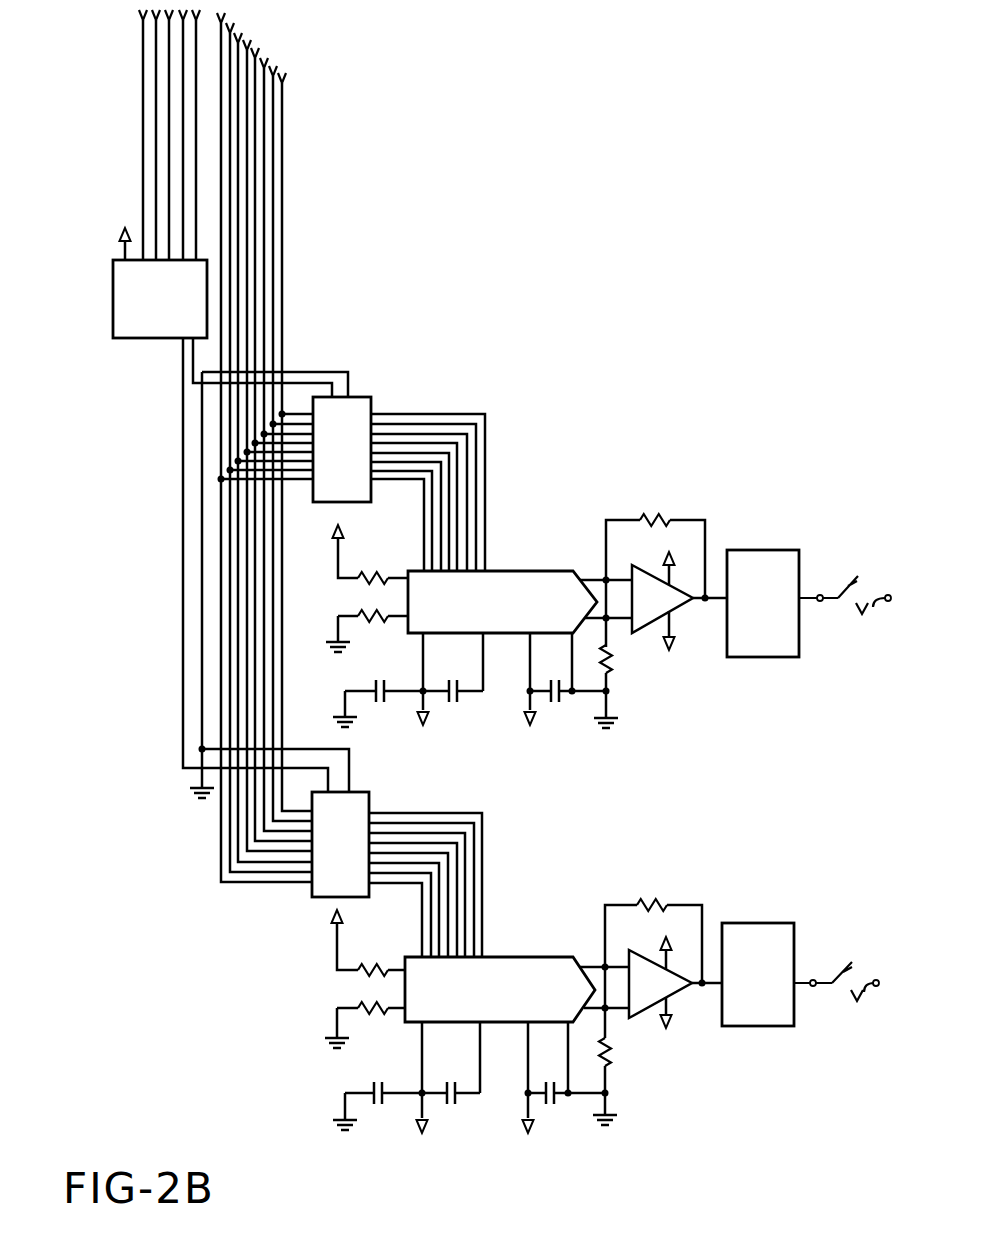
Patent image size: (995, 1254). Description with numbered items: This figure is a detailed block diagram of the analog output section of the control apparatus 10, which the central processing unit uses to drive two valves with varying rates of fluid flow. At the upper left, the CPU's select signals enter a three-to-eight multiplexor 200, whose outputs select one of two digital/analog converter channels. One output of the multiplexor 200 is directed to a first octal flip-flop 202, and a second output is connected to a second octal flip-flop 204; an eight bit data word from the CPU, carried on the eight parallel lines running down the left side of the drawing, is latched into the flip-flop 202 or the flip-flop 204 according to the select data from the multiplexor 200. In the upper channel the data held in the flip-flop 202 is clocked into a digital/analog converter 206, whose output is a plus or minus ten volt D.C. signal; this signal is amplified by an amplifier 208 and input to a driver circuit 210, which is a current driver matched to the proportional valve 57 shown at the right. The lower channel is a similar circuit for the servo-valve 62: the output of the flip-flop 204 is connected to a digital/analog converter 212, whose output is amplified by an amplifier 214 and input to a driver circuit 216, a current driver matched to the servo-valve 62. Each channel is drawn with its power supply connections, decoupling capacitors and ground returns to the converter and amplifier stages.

The control apparatus 10 is at (82, 291).
The 3:8 multiplexor 200 is at (127, 328).
The first octal flip-flop 202 is at (357, 407).
The second octal flip-flop 204 is at (318, 896).
The digital/analog converter 206 is at (542, 575).
The amplifier 208 is at (680, 607).
The driver circuit 210 is at (763, 659).
The proportional valve 57 is at (870, 556).
The digital/analog converter 212 is at (560, 968).
The amplifier 214 is at (634, 1017).
The driver circuit 216 is at (762, 1026).
The servo-valve 62 is at (866, 947).